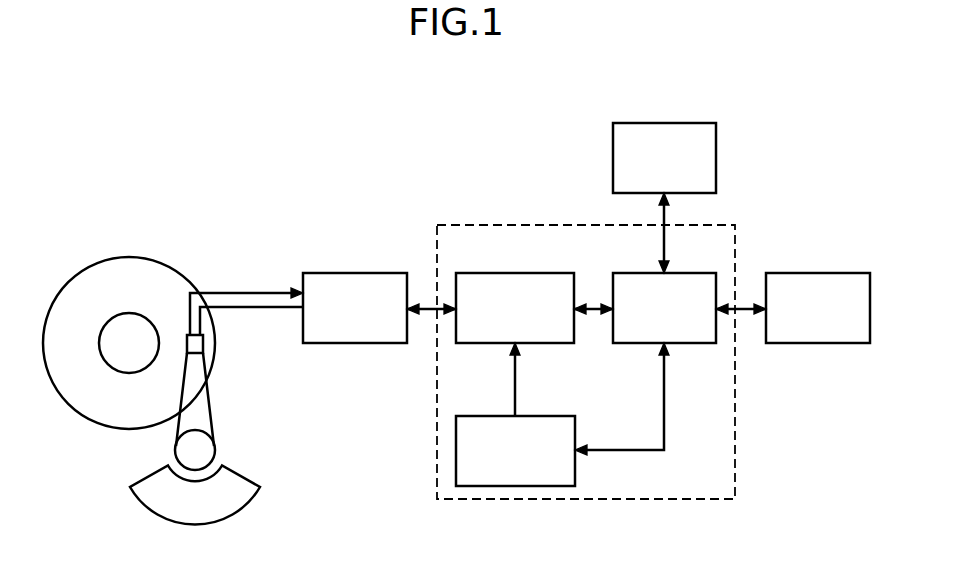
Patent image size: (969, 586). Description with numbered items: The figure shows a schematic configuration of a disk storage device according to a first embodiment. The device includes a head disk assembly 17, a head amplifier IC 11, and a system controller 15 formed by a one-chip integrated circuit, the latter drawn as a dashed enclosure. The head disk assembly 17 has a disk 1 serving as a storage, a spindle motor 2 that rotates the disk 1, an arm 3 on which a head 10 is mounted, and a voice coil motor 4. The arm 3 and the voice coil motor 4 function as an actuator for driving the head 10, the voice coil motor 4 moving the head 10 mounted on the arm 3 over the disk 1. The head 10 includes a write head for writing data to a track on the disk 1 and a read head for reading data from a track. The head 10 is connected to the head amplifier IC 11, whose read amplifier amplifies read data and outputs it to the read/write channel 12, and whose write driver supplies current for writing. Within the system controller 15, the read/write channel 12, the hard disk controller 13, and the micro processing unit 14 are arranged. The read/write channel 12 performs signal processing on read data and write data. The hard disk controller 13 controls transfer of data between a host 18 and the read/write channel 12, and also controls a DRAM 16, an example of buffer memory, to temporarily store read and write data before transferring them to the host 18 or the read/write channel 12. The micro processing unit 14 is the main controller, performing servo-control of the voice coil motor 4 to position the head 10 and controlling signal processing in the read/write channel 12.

The disk 1 is at (160, 263).
The spindle motor 2 is at (129, 313).
The arm 3 is at (212, 400).
The voice coil motor 4 is at (146, 477).
The head 10 is at (205, 345).
The head amplifier IC 11 is at (357, 273).
The read/write channel 12 is at (462, 273).
The hard disk controller 13 is at (683, 273).
The micro processing unit 14 is at (551, 416).
The system controller 15 is at (685, 225).
The DRAM 16 is at (665, 123).
The head disk assembly 17 is at (229, 226).
The host 18 is at (819, 273).